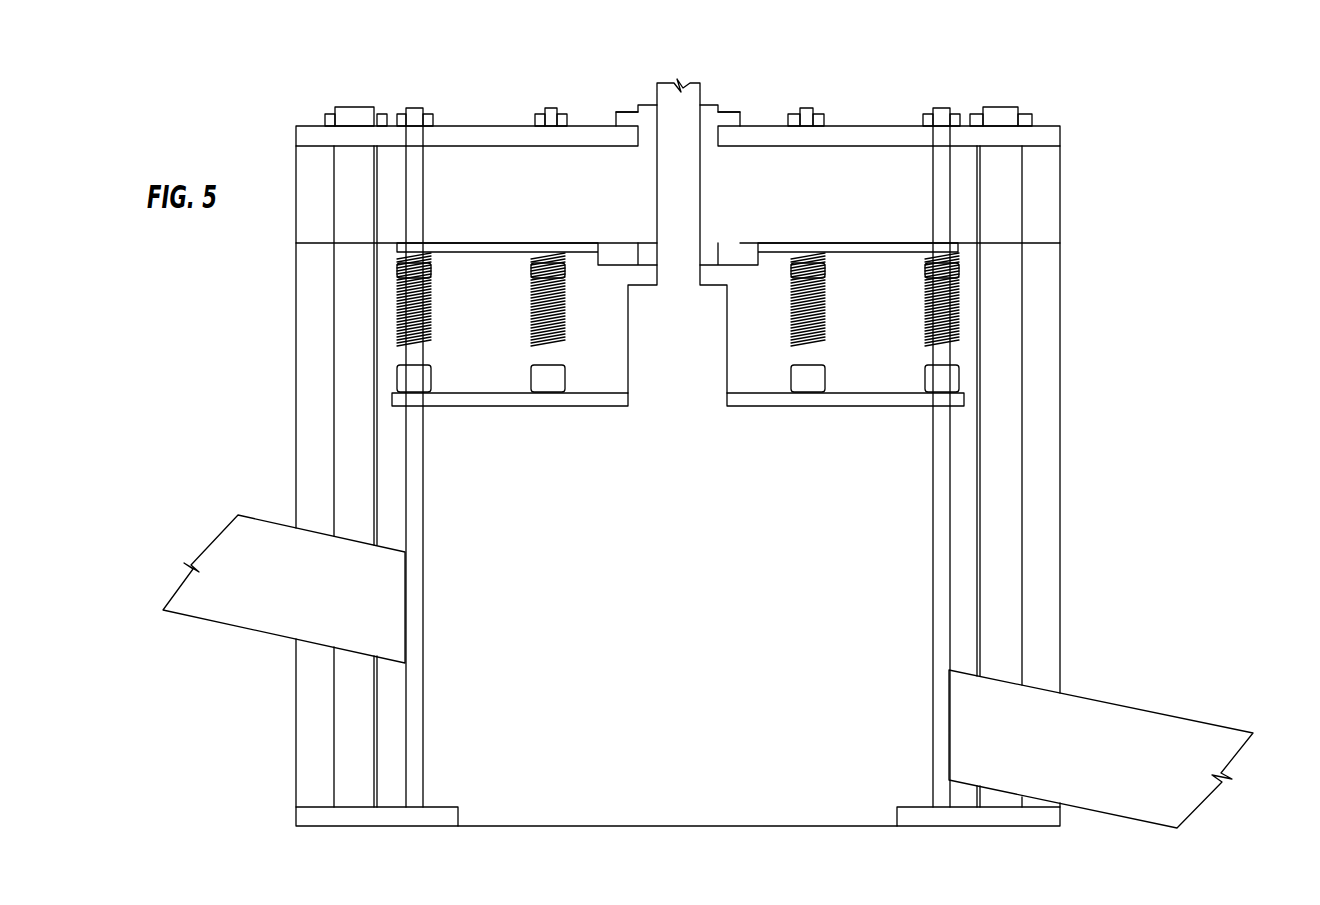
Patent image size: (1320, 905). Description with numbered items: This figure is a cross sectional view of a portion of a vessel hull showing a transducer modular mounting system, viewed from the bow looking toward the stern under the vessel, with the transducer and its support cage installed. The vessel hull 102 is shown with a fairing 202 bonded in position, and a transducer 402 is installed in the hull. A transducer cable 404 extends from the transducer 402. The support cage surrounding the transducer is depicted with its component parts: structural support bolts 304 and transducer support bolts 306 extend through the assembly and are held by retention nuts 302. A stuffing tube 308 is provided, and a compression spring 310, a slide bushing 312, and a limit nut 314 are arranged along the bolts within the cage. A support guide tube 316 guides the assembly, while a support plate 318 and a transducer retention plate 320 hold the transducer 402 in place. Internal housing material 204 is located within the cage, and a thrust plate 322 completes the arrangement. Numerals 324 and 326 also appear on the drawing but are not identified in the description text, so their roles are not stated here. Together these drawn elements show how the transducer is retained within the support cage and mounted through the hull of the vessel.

The vessel hull 102 is at (235, 612).
The fairing 202 is at (305, 710).
The internal housing material 204 is at (312, 407).
The retention nuts 302 is at (568, 110).
The structural support bolts 304 is at (357, 117).
The transducer support bolts 306 is at (549, 109).
The stuffing tube 308 is at (733, 84).
The compression spring 310 is at (960, 300).
The slide bushing 312 is at (960, 370).
The limit nut 314 is at (960, 272).
The support guide tube 316 is at (1022, 424).
The support plate 318 is at (990, 826).
The transducer retention plate 320 is at (955, 401).
The thrust plate 322 is at (485, 243).
The top plate 324 is at (1045, 132).
The outer post 326 is at (1047, 470).
The transducer 402 is at (683, 815).
The transducer cable 404 is at (663, 90).